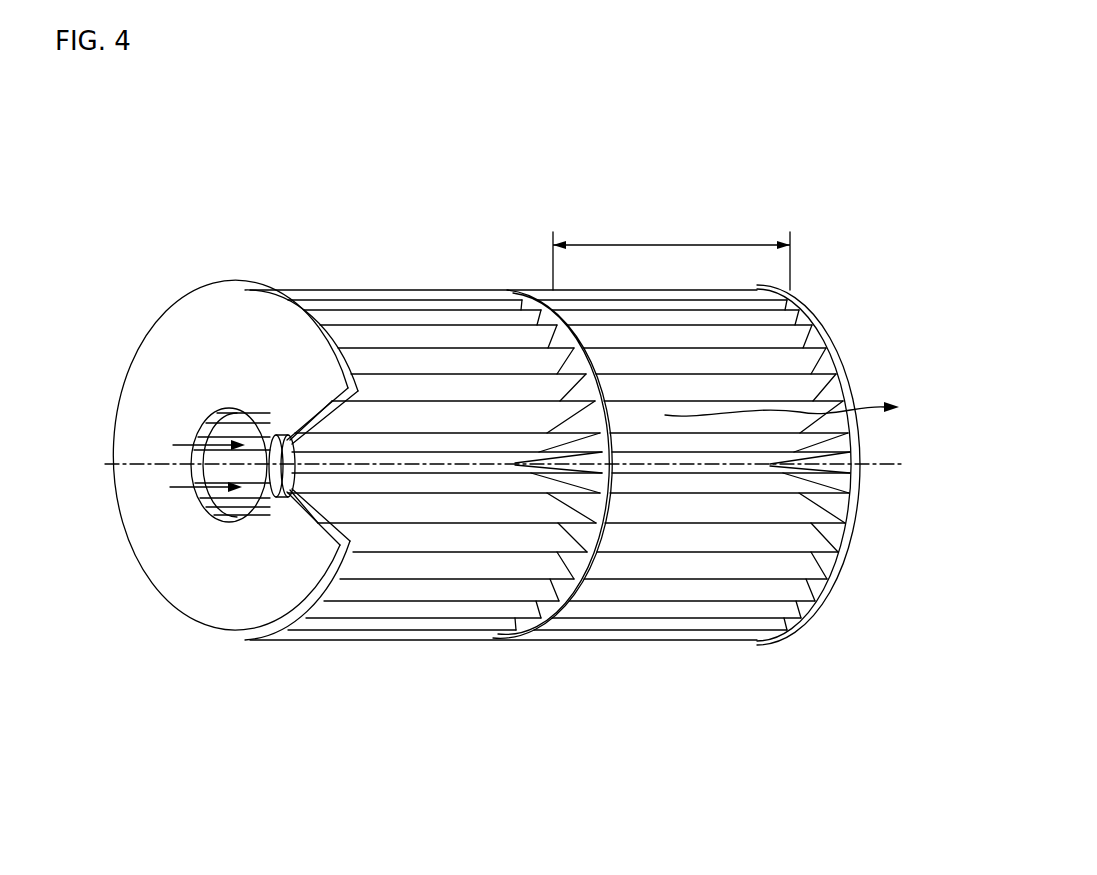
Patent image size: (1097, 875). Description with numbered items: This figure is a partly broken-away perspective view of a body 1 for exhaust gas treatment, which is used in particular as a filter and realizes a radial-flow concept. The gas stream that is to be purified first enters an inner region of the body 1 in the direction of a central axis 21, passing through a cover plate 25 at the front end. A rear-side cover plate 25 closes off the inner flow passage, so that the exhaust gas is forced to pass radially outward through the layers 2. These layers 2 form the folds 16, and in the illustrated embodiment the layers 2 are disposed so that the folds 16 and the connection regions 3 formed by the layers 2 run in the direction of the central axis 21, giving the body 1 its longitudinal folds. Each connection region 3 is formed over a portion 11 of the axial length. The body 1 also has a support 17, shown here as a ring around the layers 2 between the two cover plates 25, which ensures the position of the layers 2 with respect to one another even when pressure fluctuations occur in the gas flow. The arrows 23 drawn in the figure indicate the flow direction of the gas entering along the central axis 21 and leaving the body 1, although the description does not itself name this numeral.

The body 1 is at (403, 729).
The layers 2 is at (382, 590).
The connection regions 3 is at (375, 315).
The portion 11 is at (690, 246).
The folds 16 is at (325, 412).
The support 17 is at (560, 614).
The central axis 21 is at (127, 468).
The flow direction 23 is at (173, 445).
The cover plate 25 is at (177, 608).